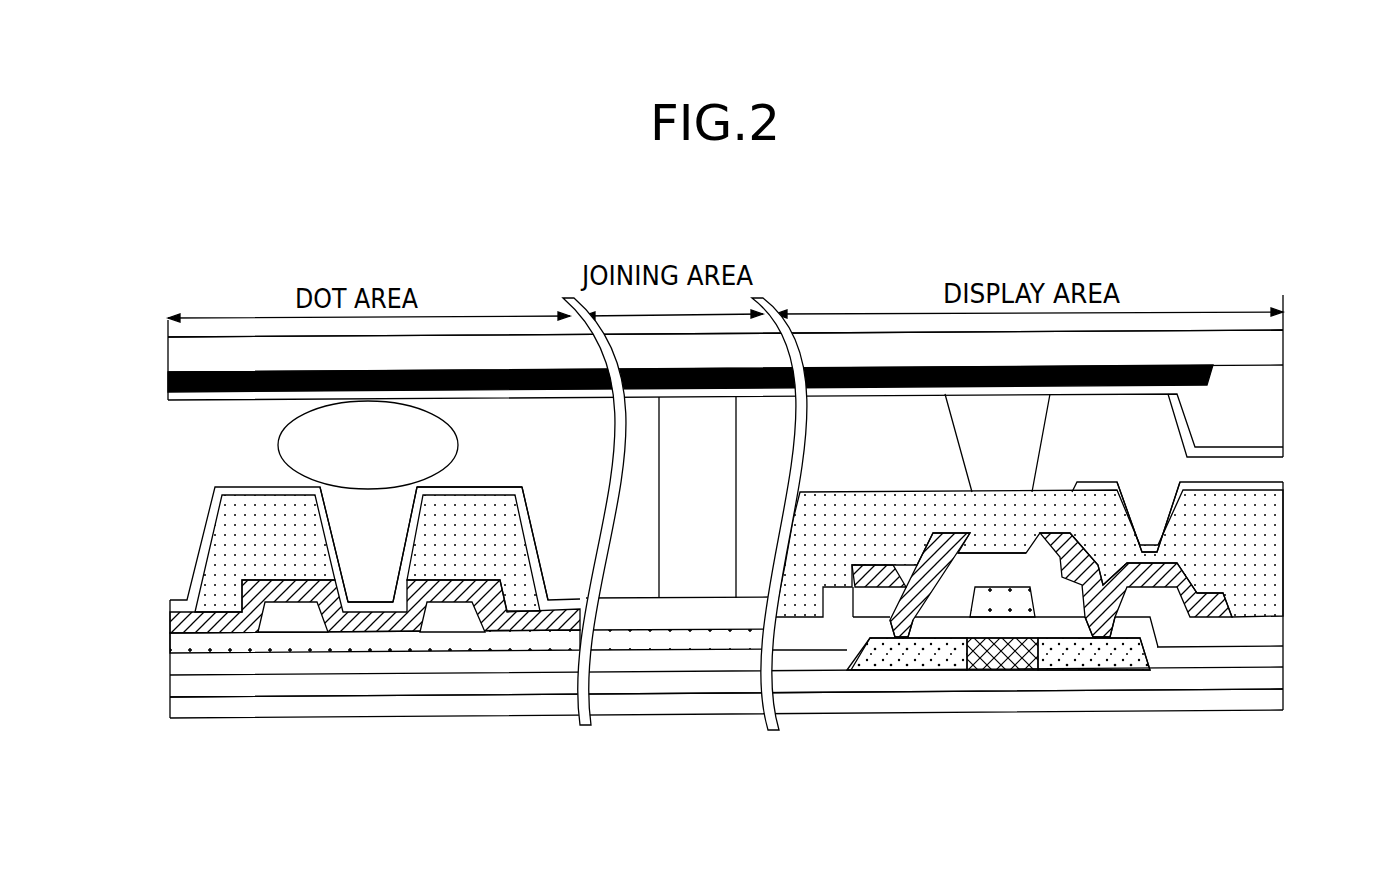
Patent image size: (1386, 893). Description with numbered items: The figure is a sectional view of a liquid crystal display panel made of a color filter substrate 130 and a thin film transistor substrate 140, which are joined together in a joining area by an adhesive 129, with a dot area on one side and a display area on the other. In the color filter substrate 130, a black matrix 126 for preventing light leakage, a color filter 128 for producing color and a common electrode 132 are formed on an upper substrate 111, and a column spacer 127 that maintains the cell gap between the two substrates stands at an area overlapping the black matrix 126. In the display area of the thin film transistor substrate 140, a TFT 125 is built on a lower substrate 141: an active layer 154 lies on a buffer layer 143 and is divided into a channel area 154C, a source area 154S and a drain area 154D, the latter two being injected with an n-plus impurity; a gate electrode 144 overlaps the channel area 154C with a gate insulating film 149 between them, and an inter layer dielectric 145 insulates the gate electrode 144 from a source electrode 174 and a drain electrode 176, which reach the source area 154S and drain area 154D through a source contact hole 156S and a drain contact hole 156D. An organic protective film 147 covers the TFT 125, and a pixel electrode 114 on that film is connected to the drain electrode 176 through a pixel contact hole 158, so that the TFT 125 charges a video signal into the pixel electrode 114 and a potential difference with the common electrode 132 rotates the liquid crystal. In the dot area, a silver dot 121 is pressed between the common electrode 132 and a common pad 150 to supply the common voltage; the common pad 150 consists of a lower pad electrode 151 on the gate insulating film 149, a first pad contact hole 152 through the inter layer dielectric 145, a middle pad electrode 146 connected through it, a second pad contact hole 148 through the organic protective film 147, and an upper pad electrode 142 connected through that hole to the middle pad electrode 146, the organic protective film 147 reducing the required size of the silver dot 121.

The upper substrate 111 is at (1283, 345).
The pixel electrode 114 is at (1283, 489).
The silver dot 121 is at (280, 454).
The TFT 125 is at (893, 537).
The black matrix 126 is at (1213, 378).
The column spacer 127 is at (962, 455).
The color filter 128 is at (1283, 405).
The adhesive 129 is at (740, 460).
The color filter substrate 130 is at (155, 370).
The common electrode 132 is at (1283, 452).
The thin film transistor substrate 140 is at (155, 514).
The lower substrate 141 is at (1283, 697).
The upper pad electrode 142 is at (537, 543).
The buffer layer 143 is at (1283, 674).
The gate electrode 144 is at (1003, 584).
The inter layer dielectric 145 is at (1283, 626).
The middle pad electrode 146 is at (513, 627).
The organic protective film 147 is at (1283, 557).
The second pad contact hole 148 is at (368, 584).
The gate insulating film 149 is at (1283, 650).
The common pad 150 is at (490, 462).
The lower pad electrode 151 is at (420, 647).
The first pad contact hole 152 is at (368, 544).
The active layer 154 is at (935, 802).
The source area 154S is at (948, 660).
The channel area 154C is at (995, 665).
The drain area 154D is at (1077, 657).
The source contact hole 156S is at (901, 641).
The drain contact hole 156D is at (1108, 634).
The pixel contact hole 158 is at (1150, 530).
The source electrode 174 is at (870, 583).
The drain electrode 176 is at (1200, 600).